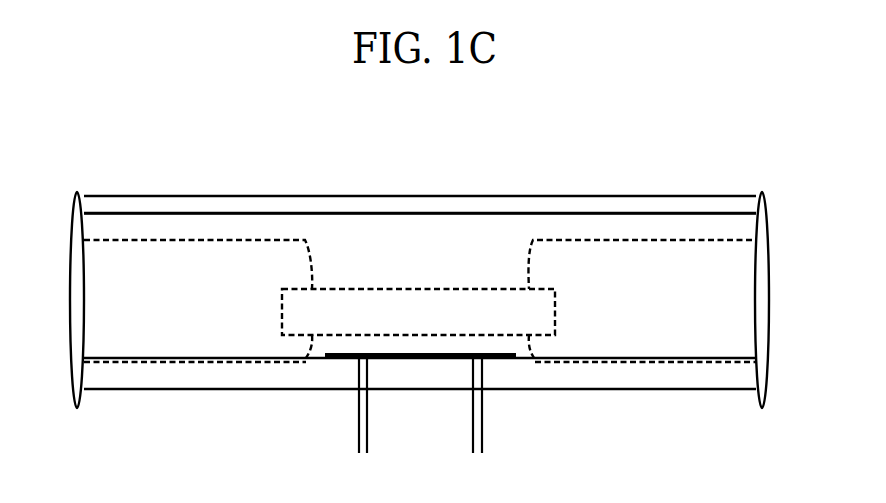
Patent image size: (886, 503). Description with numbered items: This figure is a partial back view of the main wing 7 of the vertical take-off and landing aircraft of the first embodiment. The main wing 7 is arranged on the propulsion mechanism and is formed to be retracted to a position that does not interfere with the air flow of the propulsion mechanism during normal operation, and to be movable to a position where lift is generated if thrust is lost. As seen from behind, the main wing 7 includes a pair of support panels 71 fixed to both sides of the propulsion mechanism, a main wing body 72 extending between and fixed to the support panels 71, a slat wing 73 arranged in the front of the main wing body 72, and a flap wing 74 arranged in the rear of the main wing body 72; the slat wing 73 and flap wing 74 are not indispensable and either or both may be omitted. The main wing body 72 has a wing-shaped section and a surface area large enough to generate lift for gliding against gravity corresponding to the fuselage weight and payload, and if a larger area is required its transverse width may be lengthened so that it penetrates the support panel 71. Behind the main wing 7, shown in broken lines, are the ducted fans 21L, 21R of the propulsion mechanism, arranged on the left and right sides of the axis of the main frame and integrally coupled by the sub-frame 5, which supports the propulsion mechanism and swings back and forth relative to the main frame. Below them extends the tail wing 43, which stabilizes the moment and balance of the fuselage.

The main wing 7 is at (744, 137).
The support panel 71 is at (70, 299).
The main wing body 72 is at (452, 230).
The slat wing 73 is at (268, 204).
The flap wing 74 is at (272, 382).
The sub-frame 5 is at (357, 289).
The ducted fan 21L is at (178, 240).
The ducted fan 21R is at (646, 240).
The tail wing 43 is at (483, 418).